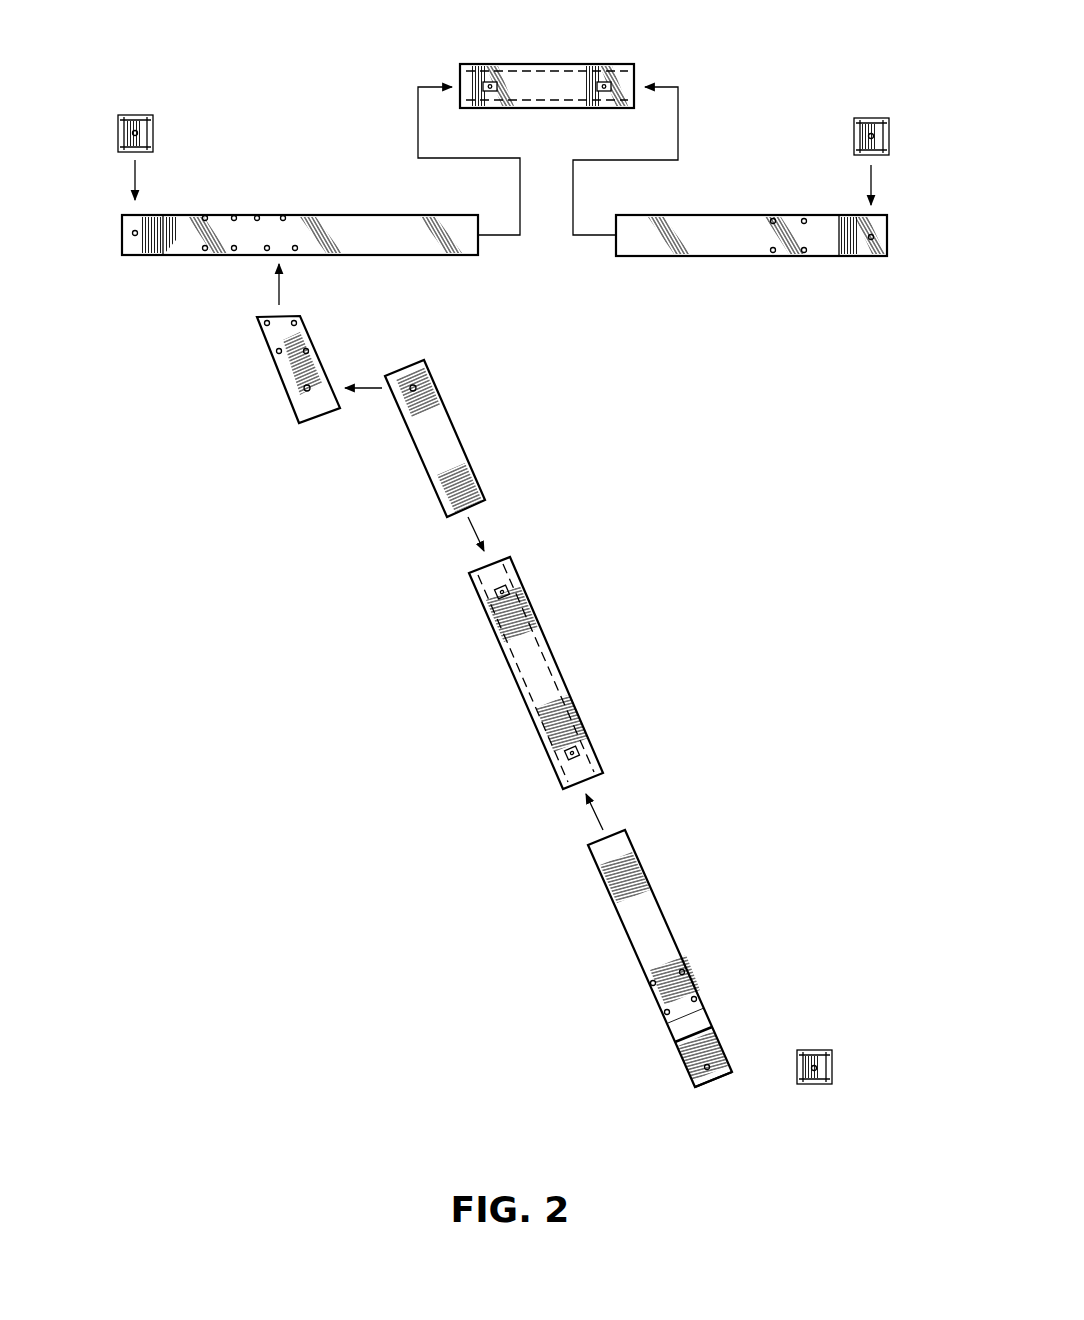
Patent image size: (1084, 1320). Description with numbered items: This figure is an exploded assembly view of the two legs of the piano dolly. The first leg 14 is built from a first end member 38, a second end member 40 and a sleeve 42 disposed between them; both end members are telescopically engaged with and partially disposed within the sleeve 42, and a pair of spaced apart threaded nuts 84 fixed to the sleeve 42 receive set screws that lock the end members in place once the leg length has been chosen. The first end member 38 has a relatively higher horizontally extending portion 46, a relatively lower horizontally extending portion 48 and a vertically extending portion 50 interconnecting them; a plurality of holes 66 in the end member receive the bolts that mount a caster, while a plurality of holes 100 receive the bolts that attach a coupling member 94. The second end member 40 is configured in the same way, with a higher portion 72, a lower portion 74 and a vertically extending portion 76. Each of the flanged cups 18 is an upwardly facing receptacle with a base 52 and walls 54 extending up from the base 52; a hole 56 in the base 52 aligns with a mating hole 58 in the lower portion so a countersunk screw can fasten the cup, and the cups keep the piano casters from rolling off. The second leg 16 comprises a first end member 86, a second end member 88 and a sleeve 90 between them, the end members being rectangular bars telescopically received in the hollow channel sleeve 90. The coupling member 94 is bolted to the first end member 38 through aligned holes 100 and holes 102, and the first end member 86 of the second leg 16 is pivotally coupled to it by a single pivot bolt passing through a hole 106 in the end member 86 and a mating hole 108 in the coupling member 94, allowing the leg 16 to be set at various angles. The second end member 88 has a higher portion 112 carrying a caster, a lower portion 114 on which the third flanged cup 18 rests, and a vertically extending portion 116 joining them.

The first leg 14 is at (333, 128).
The second leg 16 is at (316, 548).
The flanged cup 18 is at (127, 110).
The first end member 38 is at (351, 211).
The second end member 40 is at (674, 211).
The sleeve 42 is at (536, 61).
The relatively higher horizontally extending portion 46 is at (408, 228).
The relatively lower horizontally extending portion 48 is at (124, 228).
The vertically extending portion 50 is at (163, 215).
The base 52 is at (148, 139).
The walls 54 is at (152, 115).
The hole 56 is at (138, 133).
The mating hole 58 is at (137, 237).
The holes 66 is at (234, 216).
The relatively higher horizontally extending portion 72 is at (730, 256).
The relatively lower horizontally extending portion 74 is at (861, 258).
The vertically extending portion 76 is at (839, 258).
The threaded nuts 84 is at (490, 92).
The first end member 86 is at (456, 421).
The second end member 88 is at (672, 920).
The sleeve 90 is at (556, 648).
The coupling member 94 is at (273, 370).
The holes 100 is at (295, 246).
The holes 102 is at (281, 351).
The hole 106 is at (413, 384).
The mating hole 108 is at (307, 391).
The relatively higher horizontally extending portion 112 is at (680, 1026).
The relatively lower horizontally extending portion 114 is at (697, 1069).
The vertically extending portion 116 is at (680, 1055).